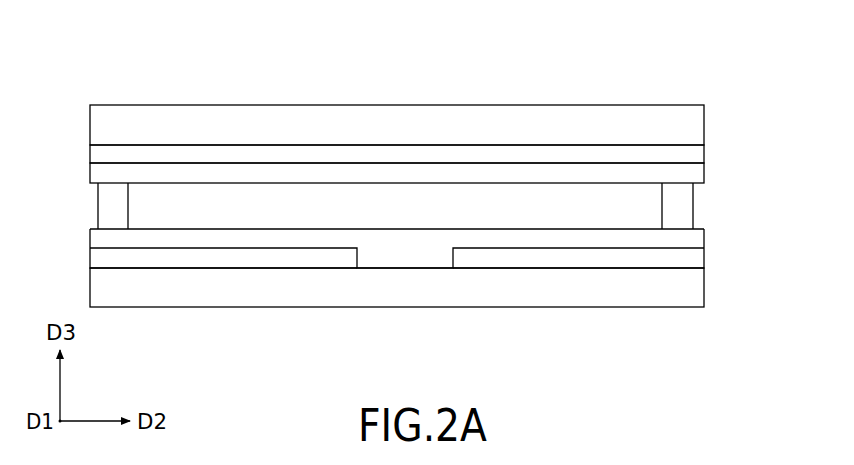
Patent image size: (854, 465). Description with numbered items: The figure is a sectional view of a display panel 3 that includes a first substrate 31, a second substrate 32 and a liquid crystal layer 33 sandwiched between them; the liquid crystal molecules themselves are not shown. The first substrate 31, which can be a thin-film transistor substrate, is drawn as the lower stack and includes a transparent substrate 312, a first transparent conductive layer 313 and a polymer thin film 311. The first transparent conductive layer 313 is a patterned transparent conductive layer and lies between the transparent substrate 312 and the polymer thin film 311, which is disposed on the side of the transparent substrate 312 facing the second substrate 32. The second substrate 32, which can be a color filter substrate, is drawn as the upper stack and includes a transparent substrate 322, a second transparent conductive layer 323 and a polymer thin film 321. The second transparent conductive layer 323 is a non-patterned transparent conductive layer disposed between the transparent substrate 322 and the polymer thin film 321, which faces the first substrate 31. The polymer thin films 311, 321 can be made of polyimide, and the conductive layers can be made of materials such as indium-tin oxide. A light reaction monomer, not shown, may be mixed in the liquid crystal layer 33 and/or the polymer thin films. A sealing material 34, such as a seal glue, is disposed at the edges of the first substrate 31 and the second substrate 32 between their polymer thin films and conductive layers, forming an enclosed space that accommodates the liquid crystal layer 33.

The display panel 3 is at (156, 46).
The first substrate 31 is at (782, 232).
The polymer thin film 311 is at (700, 238).
The transparent substrate 312 is at (698, 290).
The first transparent conductive layer 313 is at (700, 260).
The second substrate 32 is at (782, 115).
The polymer thin film 321 is at (698, 172).
The transparent substrate 322 is at (698, 123).
The second transparent conductive layer 323 is at (698, 152).
The liquid crystal layer 33 is at (149, 214).
The sealing material 34 is at (683, 205).